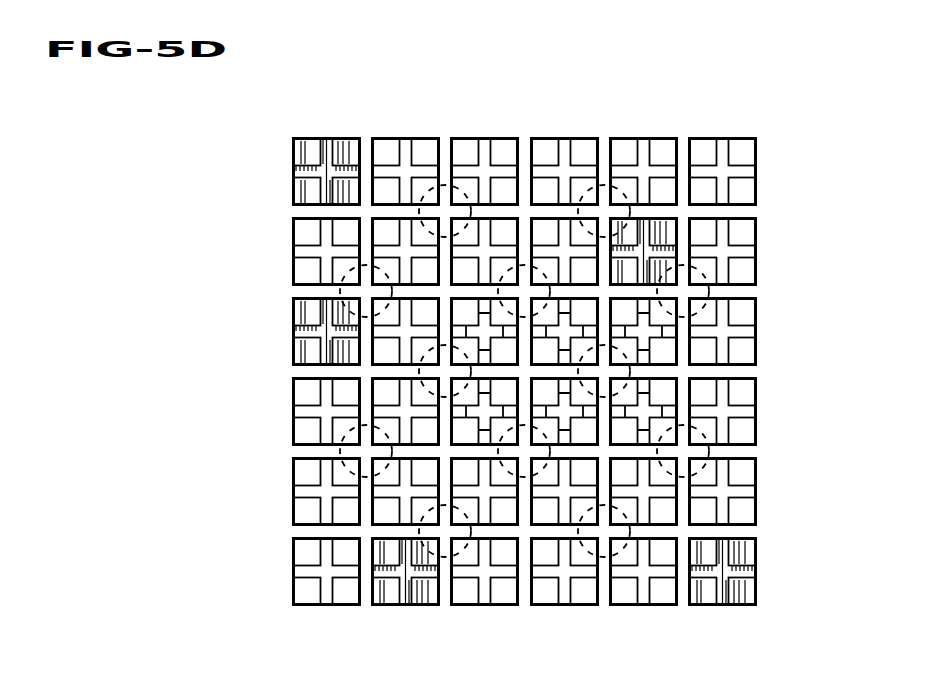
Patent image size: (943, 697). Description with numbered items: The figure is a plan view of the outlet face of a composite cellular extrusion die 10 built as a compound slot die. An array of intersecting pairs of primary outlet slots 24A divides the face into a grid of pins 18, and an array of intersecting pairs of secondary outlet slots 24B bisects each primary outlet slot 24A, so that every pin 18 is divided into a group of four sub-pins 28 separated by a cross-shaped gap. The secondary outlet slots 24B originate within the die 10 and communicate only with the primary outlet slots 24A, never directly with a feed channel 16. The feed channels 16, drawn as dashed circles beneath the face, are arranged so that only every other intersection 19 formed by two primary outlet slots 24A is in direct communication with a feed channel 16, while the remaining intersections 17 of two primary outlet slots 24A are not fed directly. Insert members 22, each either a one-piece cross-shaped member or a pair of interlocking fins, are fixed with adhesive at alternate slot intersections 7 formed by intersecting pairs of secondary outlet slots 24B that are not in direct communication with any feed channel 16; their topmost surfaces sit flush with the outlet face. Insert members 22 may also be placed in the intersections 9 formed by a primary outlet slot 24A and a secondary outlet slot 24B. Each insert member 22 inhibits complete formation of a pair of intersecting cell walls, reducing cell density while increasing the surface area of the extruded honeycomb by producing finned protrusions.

The slot intersection 7 is at (312, 170).
The intersection 9 is at (372, 245).
The composite cellular extrusion die 10 is at (243, 262).
The feed channel 16 is at (455, 188).
The intersection 17 is at (683, 216).
The pin 18 is at (757, 125).
The intersection 19 is at (682, 453).
The insert member 22 is at (663, 333).
The primary outlet slot 24A is at (367, 138).
The secondary outlet slot 24B is at (327, 137).
The sub-pin 28 is at (745, 592).